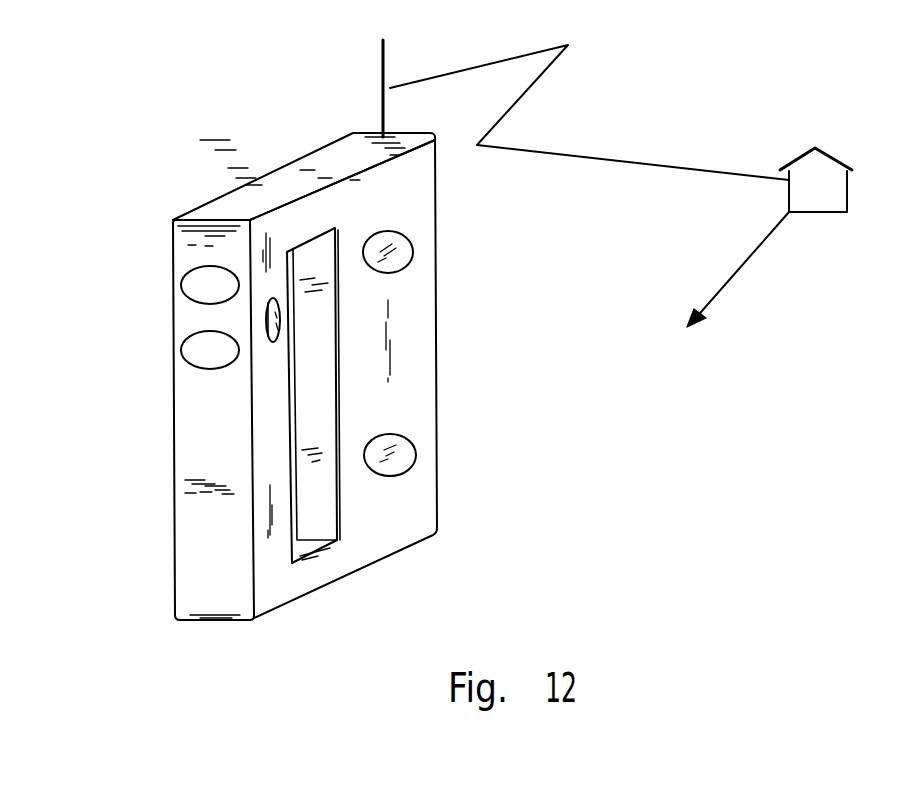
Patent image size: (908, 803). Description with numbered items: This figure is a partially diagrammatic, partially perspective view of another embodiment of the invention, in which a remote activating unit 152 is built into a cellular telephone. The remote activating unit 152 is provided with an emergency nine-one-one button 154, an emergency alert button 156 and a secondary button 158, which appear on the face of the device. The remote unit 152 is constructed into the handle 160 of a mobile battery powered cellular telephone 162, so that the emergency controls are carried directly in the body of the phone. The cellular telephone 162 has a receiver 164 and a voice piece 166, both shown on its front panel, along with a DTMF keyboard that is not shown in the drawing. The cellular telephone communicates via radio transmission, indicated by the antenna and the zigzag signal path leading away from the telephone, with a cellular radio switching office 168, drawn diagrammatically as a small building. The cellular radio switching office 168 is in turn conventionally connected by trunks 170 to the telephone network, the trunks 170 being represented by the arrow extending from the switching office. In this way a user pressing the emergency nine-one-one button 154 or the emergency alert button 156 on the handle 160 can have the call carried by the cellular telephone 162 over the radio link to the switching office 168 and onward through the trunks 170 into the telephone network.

The remote activating unit 152 is at (155, 190).
The 911 button 154 is at (182, 286).
The emergency alert button 156 is at (186, 355).
The secondary button 158 is at (270, 343).
The handle 160 is at (185, 520).
The mobile battery powered cellular telephone 162 is at (437, 355).
The receiver 164 is at (405, 243).
The voice piece 166 is at (403, 458).
The cellular radio switching office 168 is at (812, 148).
The trunks 170 is at (735, 273).